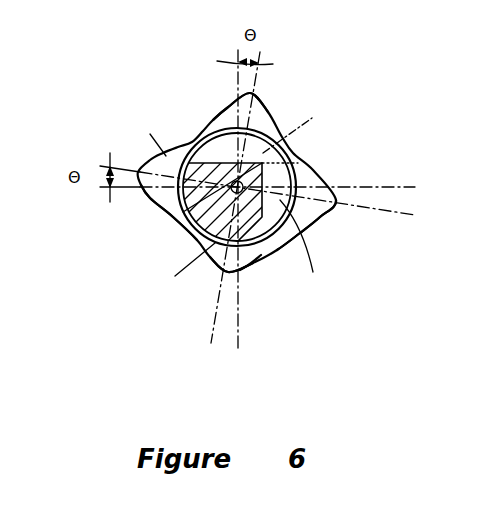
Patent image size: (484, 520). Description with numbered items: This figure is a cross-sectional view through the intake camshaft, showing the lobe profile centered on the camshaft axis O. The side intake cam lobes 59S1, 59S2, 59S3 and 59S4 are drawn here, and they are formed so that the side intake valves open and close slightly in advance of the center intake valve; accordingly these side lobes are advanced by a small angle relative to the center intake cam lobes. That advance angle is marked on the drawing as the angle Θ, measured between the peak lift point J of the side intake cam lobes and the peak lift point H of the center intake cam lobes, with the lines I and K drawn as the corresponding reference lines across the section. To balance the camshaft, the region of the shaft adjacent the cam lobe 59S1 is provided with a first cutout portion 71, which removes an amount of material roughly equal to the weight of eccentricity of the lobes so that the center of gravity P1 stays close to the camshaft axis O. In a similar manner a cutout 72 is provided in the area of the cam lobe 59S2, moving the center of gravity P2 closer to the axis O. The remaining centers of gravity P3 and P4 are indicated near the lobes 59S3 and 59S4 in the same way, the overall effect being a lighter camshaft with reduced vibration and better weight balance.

The peak lift point of the center intake cam lobes H is at (203, 54).
The peak lift point of the side intake cam lobes J is at (262, 83).
The horizontal axis line I is at (400, 187).
The rotated horizontal axis line K is at (370, 205).
The camshaft axis O is at (180, 214).
The center of gravity P1 is at (301, 129).
The center of gravity P2 is at (310, 236).
The center of gravity P3 is at (151, 132).
The fourth plane P4 is at (186, 274).
The first cutout portion 71 is at (217, 148).
The cutout 72 is at (247, 264).
The side intake cam lobe 59S1 is at (250, 113).
The side intake cam lobe 59S2 is at (327, 210).
The side intake cam lobe 59S3 is at (153, 201).
The side intake cam lobe 59S4 is at (262, 305).